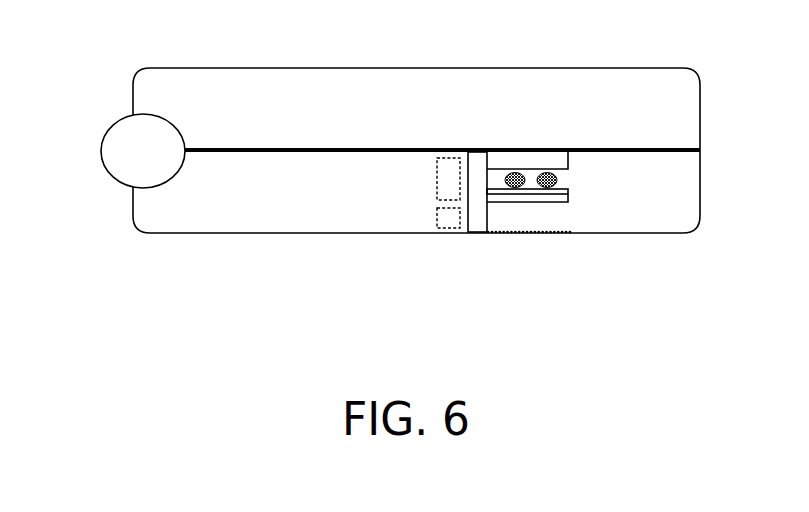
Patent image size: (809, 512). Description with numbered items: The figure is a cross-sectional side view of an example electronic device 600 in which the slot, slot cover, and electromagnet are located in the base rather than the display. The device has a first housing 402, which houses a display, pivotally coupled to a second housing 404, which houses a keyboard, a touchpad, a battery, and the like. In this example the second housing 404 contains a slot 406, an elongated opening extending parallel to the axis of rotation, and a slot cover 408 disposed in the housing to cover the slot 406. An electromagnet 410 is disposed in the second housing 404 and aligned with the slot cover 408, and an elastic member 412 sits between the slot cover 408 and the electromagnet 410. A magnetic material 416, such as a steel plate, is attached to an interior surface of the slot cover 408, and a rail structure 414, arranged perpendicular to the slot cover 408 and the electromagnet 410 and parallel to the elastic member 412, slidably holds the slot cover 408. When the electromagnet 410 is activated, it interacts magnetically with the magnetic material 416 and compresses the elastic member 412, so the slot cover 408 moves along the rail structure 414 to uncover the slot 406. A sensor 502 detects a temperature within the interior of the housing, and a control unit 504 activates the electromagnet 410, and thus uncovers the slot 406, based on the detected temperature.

The first housing 402 is at (133, 88).
The second housing 404 is at (133, 207).
The slot 406 is at (555, 234).
The slot cover 408 is at (570, 205).
The electromagnet 410 is at (568, 157).
The elastic member 412 is at (504, 169).
The rail structure 414 is at (478, 233).
The magnetic material 416 is at (568, 196).
The sensor 502 is at (447, 226).
The control unit 504 is at (445, 161).
The electronic device 600 is at (522, 336).